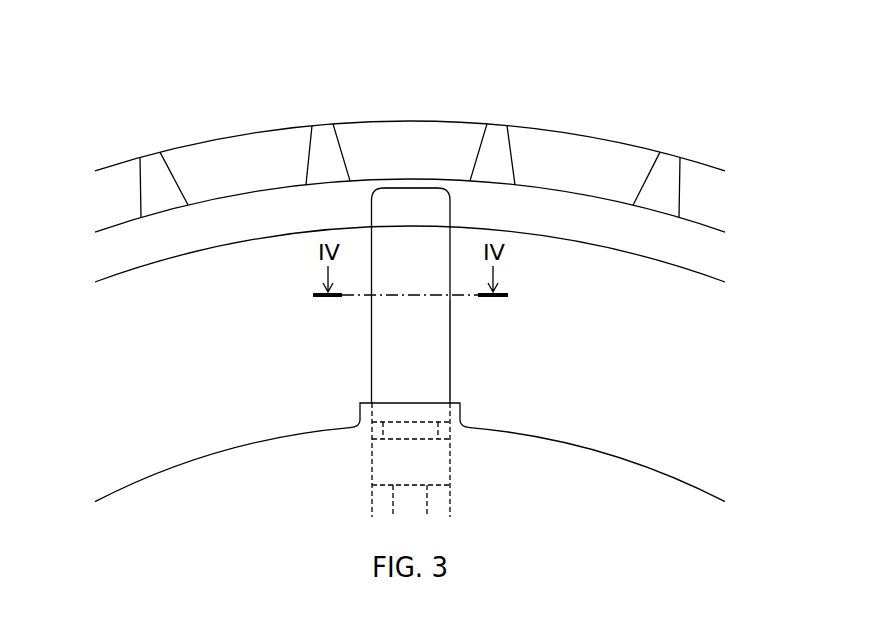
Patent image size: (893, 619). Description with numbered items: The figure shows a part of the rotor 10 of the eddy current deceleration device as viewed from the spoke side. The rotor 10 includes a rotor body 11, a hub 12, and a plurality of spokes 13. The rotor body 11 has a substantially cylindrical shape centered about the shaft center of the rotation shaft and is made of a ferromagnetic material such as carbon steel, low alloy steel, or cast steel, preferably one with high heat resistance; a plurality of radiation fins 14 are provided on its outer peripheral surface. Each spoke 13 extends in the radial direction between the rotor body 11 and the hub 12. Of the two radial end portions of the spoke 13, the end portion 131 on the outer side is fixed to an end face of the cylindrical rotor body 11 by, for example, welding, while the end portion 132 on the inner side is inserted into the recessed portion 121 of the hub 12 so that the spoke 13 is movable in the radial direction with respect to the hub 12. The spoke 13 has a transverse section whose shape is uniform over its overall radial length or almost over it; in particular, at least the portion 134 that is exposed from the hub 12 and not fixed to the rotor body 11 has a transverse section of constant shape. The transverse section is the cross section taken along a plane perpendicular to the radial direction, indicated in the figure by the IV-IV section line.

The rotor 10 is at (643, 123).
The rotor body 11 is at (240, 188).
The hub 12 is at (643, 465).
The spoke 13 is at (385, 185).
The end portion 131 is at (408, 203).
The end portion 132 is at (388, 415).
The portion 134 is at (407, 345).
The radiation fins 14 is at (493, 122).
The recessed portion 121 is at (370, 459).